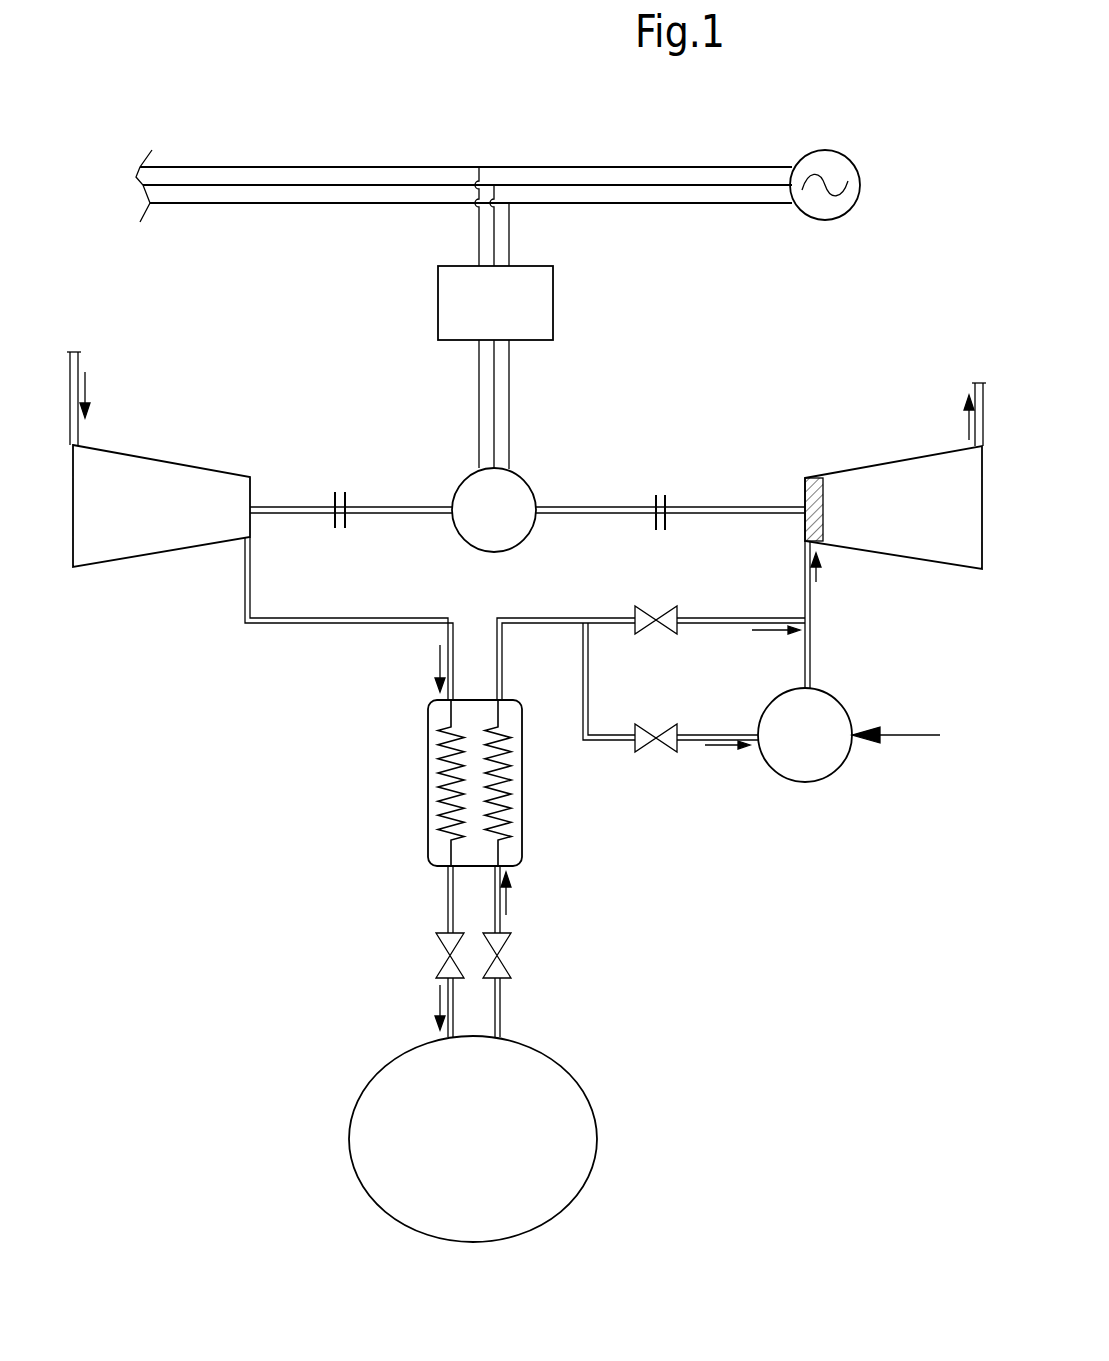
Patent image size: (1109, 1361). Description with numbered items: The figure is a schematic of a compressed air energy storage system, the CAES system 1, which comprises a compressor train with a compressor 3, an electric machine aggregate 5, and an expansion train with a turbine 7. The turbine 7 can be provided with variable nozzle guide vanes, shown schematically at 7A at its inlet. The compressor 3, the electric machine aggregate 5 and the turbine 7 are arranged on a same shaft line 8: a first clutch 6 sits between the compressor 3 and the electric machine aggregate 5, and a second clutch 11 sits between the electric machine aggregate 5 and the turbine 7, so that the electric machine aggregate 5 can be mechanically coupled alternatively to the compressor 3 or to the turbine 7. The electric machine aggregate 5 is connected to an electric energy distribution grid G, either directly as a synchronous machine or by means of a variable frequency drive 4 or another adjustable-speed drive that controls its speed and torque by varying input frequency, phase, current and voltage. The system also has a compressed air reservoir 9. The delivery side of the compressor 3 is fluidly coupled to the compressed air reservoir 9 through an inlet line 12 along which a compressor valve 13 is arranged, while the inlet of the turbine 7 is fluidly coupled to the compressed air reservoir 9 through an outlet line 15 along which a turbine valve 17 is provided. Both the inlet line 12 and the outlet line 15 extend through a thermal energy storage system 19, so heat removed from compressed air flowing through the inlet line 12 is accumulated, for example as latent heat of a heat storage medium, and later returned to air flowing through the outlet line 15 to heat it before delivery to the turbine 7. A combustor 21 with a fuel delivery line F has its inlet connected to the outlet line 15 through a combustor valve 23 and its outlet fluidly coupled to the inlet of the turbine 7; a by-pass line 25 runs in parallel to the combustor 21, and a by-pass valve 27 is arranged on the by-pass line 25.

The CAES system 1 is at (712, 336).
The compressor 3 is at (133, 465).
The variable frequency drive 4 is at (539, 312).
The electric machine aggregate 5 is at (540, 468).
The first clutch 6 is at (331, 522).
The turbine 7 is at (912, 476).
The variable nozzle guide vanes 7A is at (812, 478).
The shaft line 8 is at (372, 506).
The compressed air reservoir 9 is at (570, 1165).
The second clutch 11 is at (653, 524).
The inlet line 12 is at (372, 623).
The compressor valve 13 is at (448, 955).
The outlet line 15 is at (535, 620).
The turbine valve 17 is at (502, 957).
The thermal energy storage system 19 is at (432, 800).
The combustor 21 is at (815, 703).
The combustor valve 23 is at (646, 740).
The by-pass line 25 is at (740, 620).
The by-pass valve 27 is at (656, 618).
The electric energy distribution grid G is at (110, 176).
The fuel delivery line F is at (903, 735).